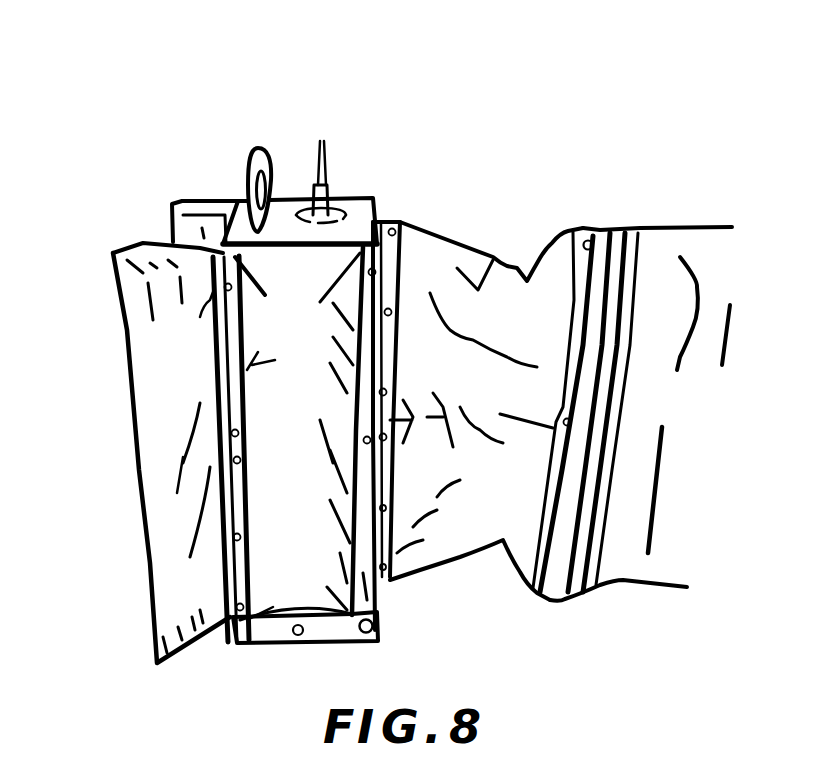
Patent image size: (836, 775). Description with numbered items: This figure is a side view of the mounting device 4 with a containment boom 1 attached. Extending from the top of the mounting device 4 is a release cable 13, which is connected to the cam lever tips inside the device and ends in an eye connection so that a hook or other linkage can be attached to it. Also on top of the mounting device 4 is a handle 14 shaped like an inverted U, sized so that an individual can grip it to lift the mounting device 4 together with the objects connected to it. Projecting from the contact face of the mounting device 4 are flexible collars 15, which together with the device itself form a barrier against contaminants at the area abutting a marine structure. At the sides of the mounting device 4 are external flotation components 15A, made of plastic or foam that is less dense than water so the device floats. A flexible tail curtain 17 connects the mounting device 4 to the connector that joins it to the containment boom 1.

The containment boom 1 is at (698, 225).
The mounting device 4 is at (365, 217).
The release cable 13 is at (322, 140).
The handle 14 is at (260, 147).
The collar 15 is at (138, 471).
The external flotation component 15A is at (212, 370).
The flexible tail curtain 17 is at (473, 247).